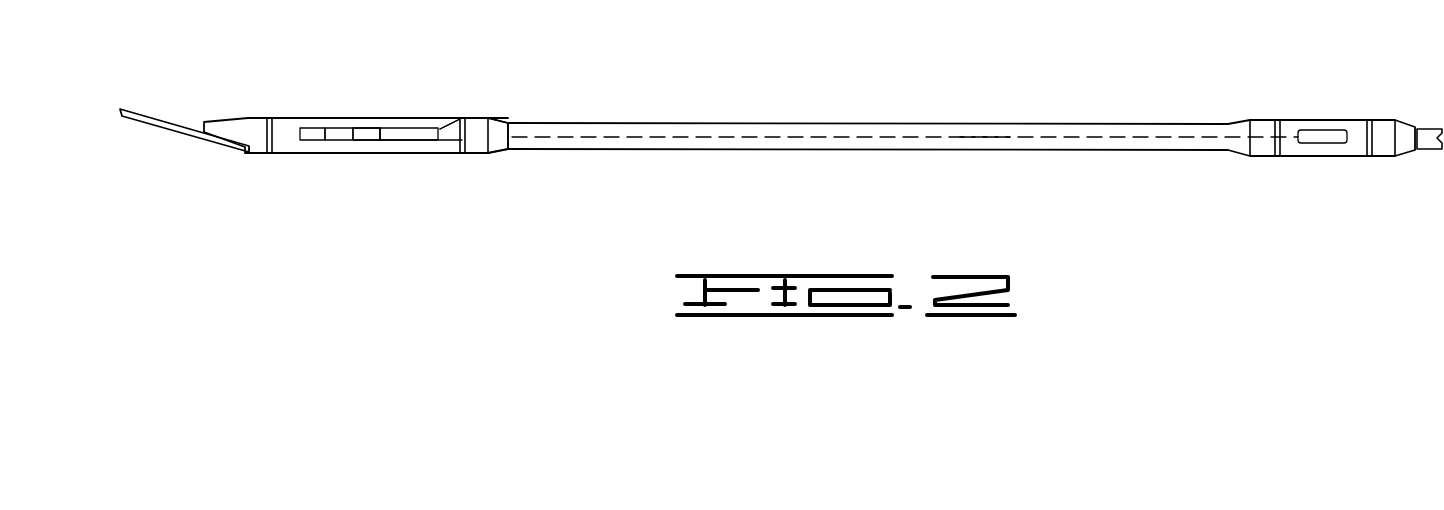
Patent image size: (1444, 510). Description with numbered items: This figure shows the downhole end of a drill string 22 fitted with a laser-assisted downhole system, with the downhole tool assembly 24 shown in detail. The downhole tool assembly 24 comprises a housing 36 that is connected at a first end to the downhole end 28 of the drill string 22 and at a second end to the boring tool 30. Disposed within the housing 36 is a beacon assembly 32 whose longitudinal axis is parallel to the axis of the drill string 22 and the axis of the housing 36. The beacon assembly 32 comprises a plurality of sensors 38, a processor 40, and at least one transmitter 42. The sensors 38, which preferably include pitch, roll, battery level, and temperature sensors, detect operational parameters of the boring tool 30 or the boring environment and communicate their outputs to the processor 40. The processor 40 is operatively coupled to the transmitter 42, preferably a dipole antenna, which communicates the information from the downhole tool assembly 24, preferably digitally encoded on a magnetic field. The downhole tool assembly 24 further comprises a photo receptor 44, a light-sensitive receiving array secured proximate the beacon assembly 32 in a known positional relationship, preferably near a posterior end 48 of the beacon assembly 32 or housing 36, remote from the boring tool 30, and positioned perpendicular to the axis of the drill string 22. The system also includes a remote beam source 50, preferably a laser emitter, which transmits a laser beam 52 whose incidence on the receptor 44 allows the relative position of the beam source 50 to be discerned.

The drill string 22 is at (1022, 150).
The downhole tool assembly 24 is at (297, 63).
The downhole end 28 is at (510, 123).
The boring tool 30 is at (180, 137).
The beacon assembly 32 is at (318, 142).
The housing 36 is at (422, 155).
The plurality of sensors 38 is at (340, 128).
The processor 40 is at (367, 128).
The transmitter 42 is at (392, 143).
The photo receptor 44 is at (447, 128).
The posterior end 48 is at (410, 128).
The remote beam source 50 is at (1322, 130).
The laser beam 52 is at (982, 138).